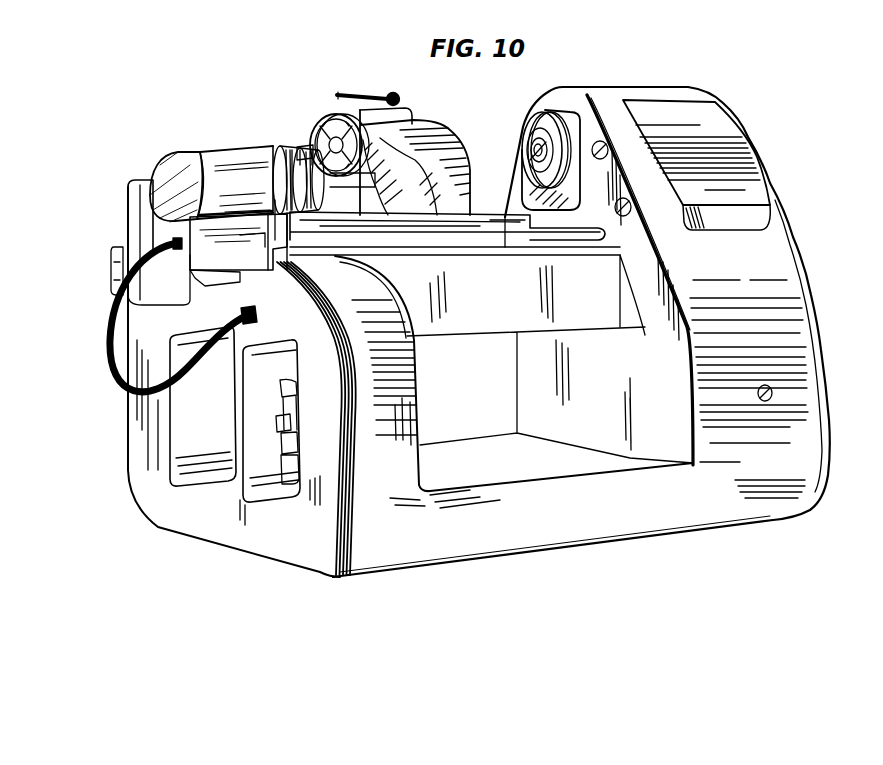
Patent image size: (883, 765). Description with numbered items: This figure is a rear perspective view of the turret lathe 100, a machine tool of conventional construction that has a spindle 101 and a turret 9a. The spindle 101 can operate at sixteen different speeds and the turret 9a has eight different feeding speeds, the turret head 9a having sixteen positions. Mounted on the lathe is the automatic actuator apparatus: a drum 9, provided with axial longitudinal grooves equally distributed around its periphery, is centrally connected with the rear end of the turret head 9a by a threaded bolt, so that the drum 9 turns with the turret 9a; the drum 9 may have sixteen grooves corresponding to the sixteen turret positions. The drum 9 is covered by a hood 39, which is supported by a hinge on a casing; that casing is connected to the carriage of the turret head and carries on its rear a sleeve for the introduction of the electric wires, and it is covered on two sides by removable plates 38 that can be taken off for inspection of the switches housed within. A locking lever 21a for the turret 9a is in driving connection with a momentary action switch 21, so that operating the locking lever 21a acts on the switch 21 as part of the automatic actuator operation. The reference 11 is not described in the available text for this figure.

The drum 9 is at (290, 150).
The turret 9a is at (472, 162).
The housing 11 is at (811, 248).
The momentary action switch 21 is at (372, 76).
The locking lever 21a is at (392, 98).
The removable plates 38 is at (235, 252).
The hood 39 is at (216, 150).
The turret lathe 100 is at (758, 126).
The spindle 101 is at (530, 150).